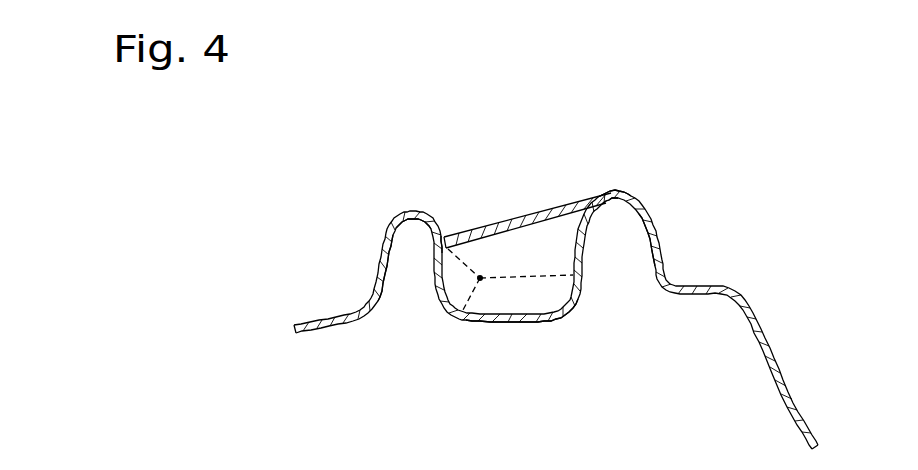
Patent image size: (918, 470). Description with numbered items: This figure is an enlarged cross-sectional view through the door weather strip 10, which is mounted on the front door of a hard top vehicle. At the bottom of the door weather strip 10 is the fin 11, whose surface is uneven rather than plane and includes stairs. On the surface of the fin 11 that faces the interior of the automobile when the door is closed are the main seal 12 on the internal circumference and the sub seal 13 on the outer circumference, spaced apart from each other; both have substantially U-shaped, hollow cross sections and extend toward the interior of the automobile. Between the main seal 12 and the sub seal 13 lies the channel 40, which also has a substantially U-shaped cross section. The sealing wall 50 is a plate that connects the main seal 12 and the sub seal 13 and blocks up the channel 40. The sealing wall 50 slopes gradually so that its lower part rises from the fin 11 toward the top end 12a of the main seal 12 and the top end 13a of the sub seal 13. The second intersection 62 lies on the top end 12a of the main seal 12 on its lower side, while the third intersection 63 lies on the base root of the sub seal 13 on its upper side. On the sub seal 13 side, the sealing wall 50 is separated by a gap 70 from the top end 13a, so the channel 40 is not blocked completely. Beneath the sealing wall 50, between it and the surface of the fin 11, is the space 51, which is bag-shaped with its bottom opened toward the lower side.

The door weather strip 10 is at (726, 247).
The fin 11 is at (550, 319).
The main seal 12 is at (648, 213).
The top end of the main seal 12a is at (620, 188).
The sub seal 13 is at (380, 279).
The top end of the sub seal 13a is at (415, 210).
The channel 40 is at (537, 294).
The sealing wall 50 is at (534, 201).
The space 51 is at (512, 250).
The second intersection 62 is at (614, 188).
The third intersection 63 is at (478, 280).
The gap 70 is at (447, 228).